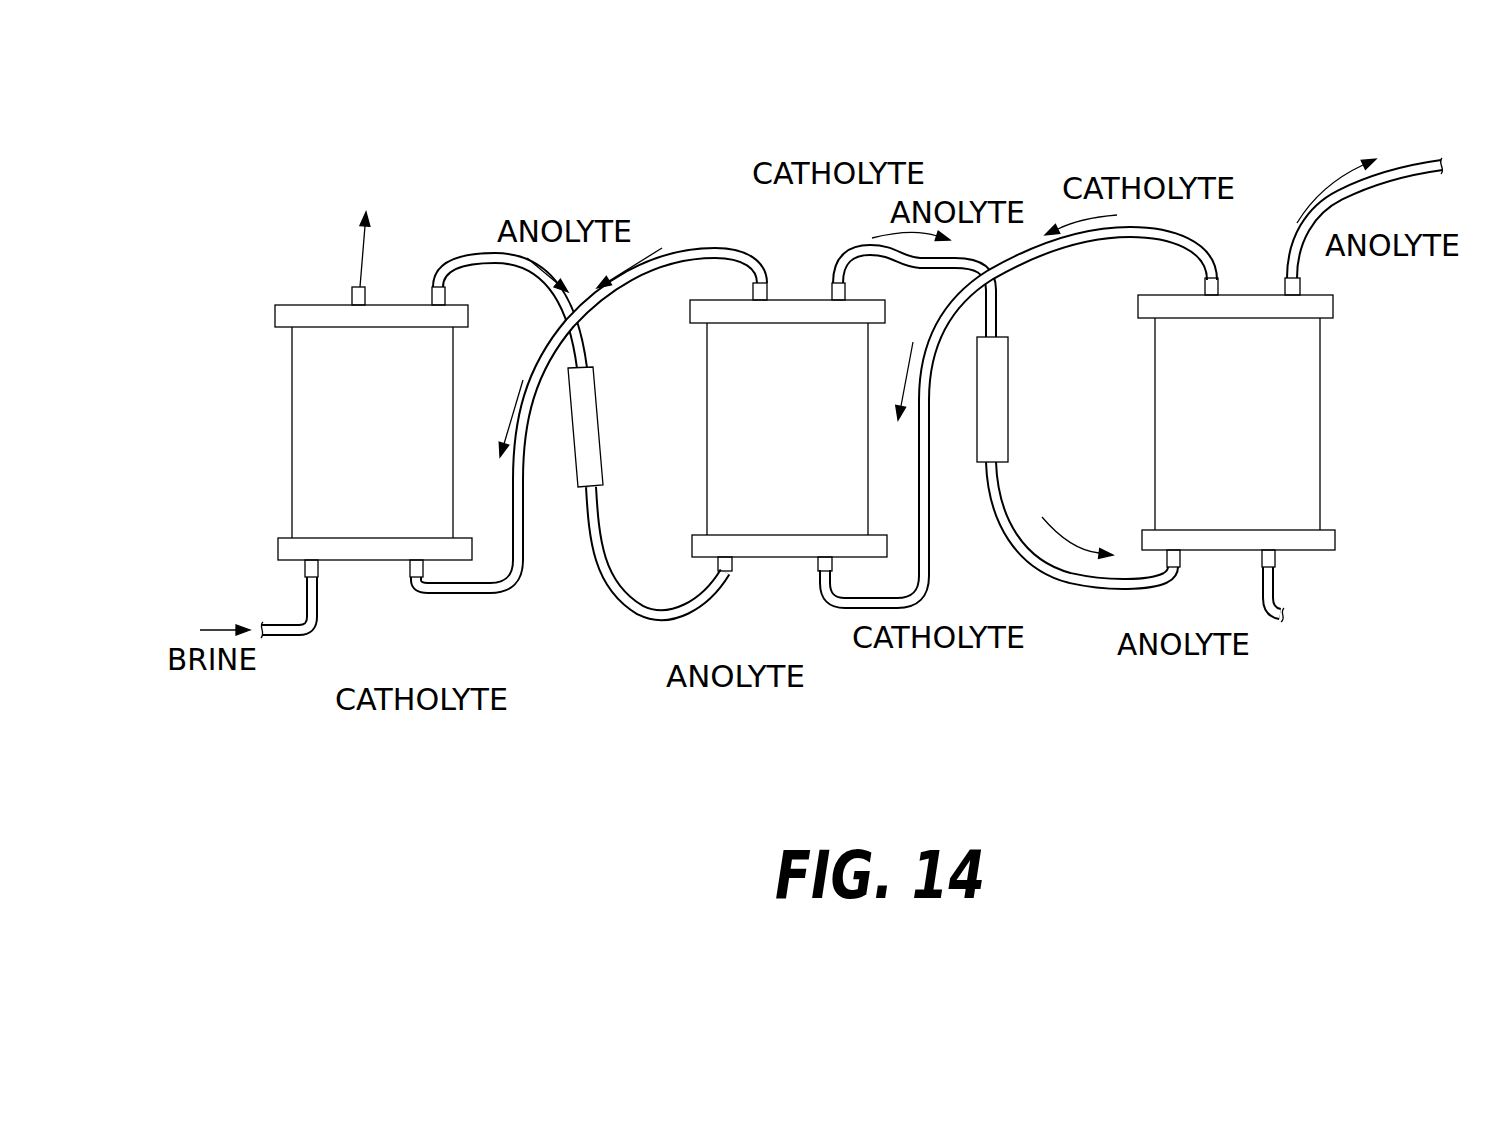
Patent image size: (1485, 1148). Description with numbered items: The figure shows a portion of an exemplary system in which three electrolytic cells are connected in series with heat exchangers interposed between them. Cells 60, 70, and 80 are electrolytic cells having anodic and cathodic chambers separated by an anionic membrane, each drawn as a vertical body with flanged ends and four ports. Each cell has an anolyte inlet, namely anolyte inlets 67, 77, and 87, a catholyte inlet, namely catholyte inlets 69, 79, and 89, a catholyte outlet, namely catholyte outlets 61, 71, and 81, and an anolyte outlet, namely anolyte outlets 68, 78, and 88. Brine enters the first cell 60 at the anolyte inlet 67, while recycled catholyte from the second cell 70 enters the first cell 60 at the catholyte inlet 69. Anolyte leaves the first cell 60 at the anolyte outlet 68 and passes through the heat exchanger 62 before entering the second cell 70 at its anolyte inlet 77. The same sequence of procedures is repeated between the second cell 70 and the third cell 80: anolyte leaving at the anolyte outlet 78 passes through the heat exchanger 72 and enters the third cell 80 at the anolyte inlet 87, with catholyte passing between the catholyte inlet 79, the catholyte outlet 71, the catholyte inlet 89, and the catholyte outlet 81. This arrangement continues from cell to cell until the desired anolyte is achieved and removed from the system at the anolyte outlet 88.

The electrolytic cell 60 is at (337, 407).
The catholyte outlet 61 is at (348, 292).
The heat exchanger 62 is at (588, 470).
The anolyte inlet 67 is at (319, 570).
The anolyte outlet 68 is at (432, 292).
The catholyte inlet 69 is at (408, 578).
The electrolytic cell 70 is at (768, 407).
The catholyte outlet 71 is at (757, 282).
The heat exchanger 72 is at (990, 464).
The anolyte inlet 77 is at (727, 570).
The anolyte outlet 78 is at (833, 284).
The catholyte inlet 79 is at (818, 569).
The electrolytic cell 80 is at (1278, 412).
The catholyte outlet 81 is at (1218, 292).
The anolyte inlet 87 is at (1181, 556).
The anolyte outlet 88 is at (1297, 225).
The catholyte inlet 89 is at (1278, 556).